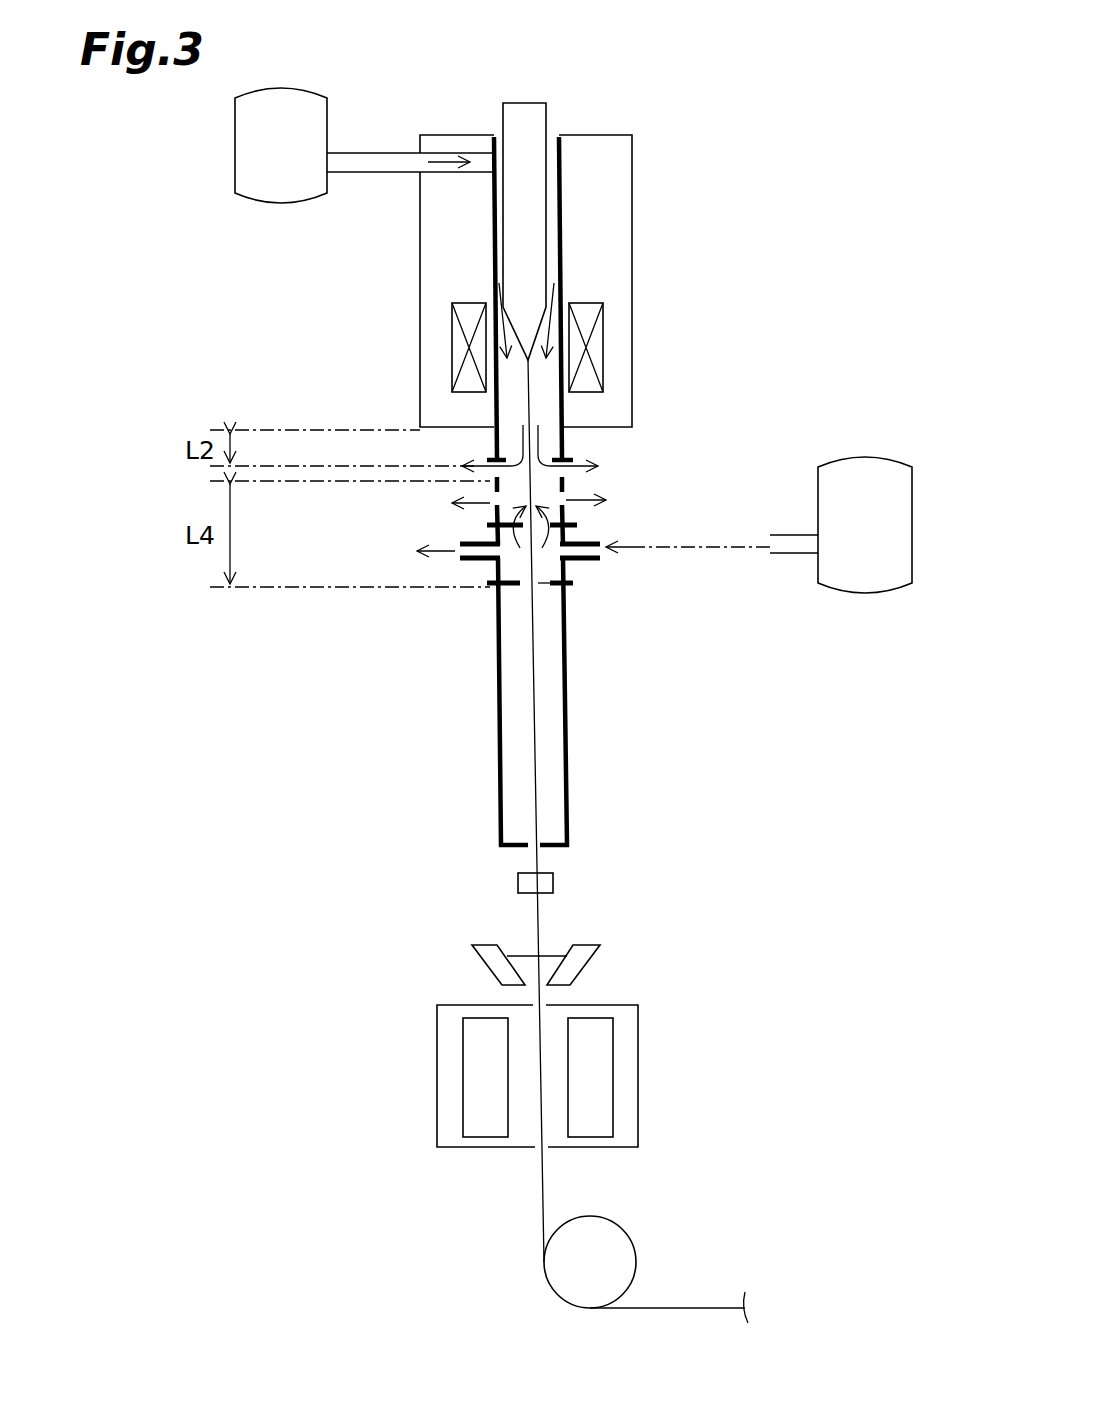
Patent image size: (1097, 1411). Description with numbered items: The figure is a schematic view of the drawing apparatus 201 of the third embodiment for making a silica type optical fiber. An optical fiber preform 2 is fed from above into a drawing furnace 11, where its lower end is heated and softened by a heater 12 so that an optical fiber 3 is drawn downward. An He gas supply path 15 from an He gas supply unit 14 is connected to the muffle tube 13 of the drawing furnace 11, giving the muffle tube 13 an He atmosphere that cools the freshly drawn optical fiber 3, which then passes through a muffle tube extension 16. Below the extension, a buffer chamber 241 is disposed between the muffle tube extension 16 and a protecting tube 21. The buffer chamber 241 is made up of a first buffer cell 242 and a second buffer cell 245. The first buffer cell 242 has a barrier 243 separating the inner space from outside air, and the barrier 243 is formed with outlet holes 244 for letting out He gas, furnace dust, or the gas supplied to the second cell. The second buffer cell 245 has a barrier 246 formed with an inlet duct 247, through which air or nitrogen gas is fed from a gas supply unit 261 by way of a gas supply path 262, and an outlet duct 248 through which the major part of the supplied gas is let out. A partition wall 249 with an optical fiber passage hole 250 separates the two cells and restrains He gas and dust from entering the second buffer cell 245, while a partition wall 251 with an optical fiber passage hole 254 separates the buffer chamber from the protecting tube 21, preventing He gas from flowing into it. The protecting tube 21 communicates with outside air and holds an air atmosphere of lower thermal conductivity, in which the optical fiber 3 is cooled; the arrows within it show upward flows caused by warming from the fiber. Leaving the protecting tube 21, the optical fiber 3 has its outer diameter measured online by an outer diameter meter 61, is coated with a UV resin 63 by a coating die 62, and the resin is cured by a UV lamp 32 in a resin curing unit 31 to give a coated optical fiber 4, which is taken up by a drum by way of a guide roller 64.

The drawing apparatus 201 is at (755, 85).
The optical fiber preform 2 is at (546, 116).
The optical fiber 3 is at (533, 740).
The coated optical fiber 4 is at (541, 1190).
The drawing furnace 11 is at (642, 268).
The heater 12 is at (603, 368).
The muffle tube 13 is at (562, 212).
The He gas supply unit 14 is at (262, 160).
The He gas supply path 15 is at (383, 173).
The muffle tube extension 16 is at (563, 437).
The protecting tube 21 is at (567, 785).
The resin curing unit 31 is at (648, 1045).
The UV lamp 32 is at (613, 1110).
The outer diameter meter 61 is at (553, 883).
The coating die 62 is at (580, 957).
The UV resin 63 is at (520, 963).
The guide roller 64 is at (548, 1262).
The buffer chamber 241 is at (320, 487).
The first buffer cell 242 is at (488, 485).
The barrier 243 is at (565, 482).
The outlet holes 244 is at (497, 506).
The second buffer cell 245 is at (487, 533).
The barrier 246 is at (567, 592).
The inlet duct 247 is at (577, 566).
The outlet duct 248 is at (487, 585).
The partition wall 249 is at (572, 608).
The optical fiber passage hole 250 is at (505, 590).
The partition wall 251 is at (520, 582).
The optical fiber passage hole 254 is at (540, 585).
The gas supply unit 261 is at (832, 540).
The gas supply path 262 is at (787, 553).